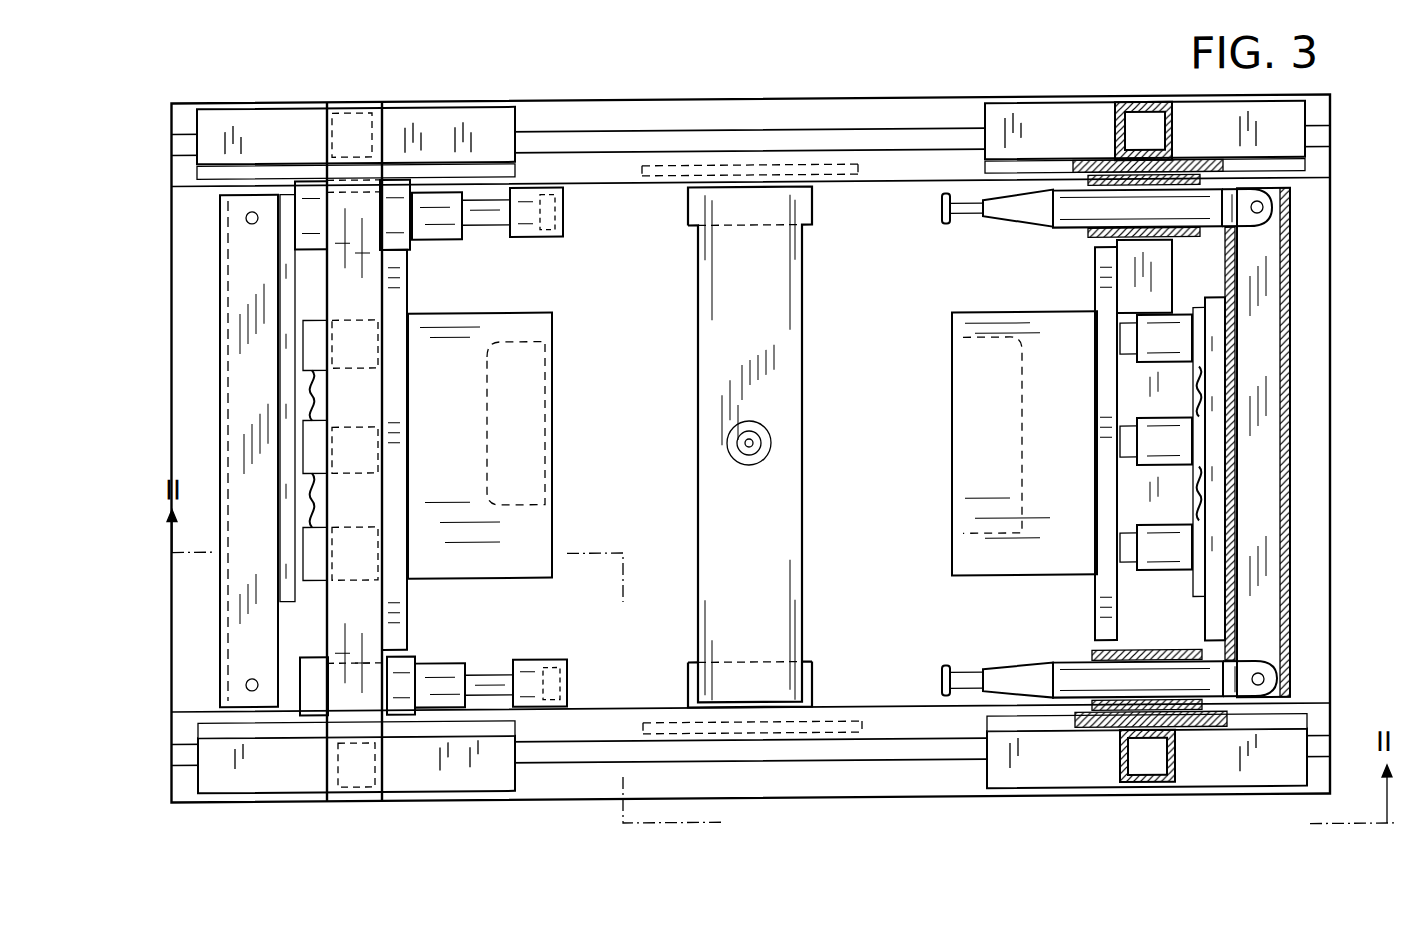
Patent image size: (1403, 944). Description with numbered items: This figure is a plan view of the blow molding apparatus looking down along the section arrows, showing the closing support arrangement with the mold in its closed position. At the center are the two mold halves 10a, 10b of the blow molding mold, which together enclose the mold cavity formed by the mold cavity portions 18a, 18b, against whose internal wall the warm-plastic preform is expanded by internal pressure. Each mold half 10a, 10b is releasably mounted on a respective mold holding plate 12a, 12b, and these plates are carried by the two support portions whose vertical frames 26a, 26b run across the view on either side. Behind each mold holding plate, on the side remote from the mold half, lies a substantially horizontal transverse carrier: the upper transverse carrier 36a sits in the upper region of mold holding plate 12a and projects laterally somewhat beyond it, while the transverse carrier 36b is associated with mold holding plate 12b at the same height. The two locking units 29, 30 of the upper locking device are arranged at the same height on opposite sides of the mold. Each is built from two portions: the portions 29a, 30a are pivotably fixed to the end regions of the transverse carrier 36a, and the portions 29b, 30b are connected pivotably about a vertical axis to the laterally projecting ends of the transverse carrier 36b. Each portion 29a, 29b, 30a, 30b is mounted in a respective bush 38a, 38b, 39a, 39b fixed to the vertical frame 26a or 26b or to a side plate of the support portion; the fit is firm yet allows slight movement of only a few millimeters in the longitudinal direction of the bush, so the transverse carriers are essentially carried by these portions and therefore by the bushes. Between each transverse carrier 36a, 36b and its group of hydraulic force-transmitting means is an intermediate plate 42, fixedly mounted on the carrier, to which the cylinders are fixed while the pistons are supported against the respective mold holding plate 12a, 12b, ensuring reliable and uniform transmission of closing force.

The mold half 10a is at (463, 373).
The mold half 10b is at (1077, 383).
The mold holding plate 12a is at (397, 605).
The mold holding plate 12b is at (1100, 597).
The mold cavity portion 18a is at (537, 443).
The mold cavity portion 18b is at (1003, 438).
The vertical frame 26a is at (360, 790).
The vertical frame 26b is at (1152, 790).
The locking unit 29 is at (565, 200).
The portion of locking unit 29a is at (497, 225).
The portion of locking unit 29b is at (965, 218).
The locking unit 30 is at (535, 705).
The portion of locking unit 30a is at (498, 680).
The portion of locking unit 30b is at (968, 674).
The upper transverse carrier 36a is at (220, 396).
The transverse carrier 36b is at (1290, 425).
The bush 38a is at (410, 247).
The bush 38b is at (1090, 242).
The bush 39a is at (417, 656).
The bush 39b is at (1093, 655).
The intermediate plate 42 is at (305, 317).